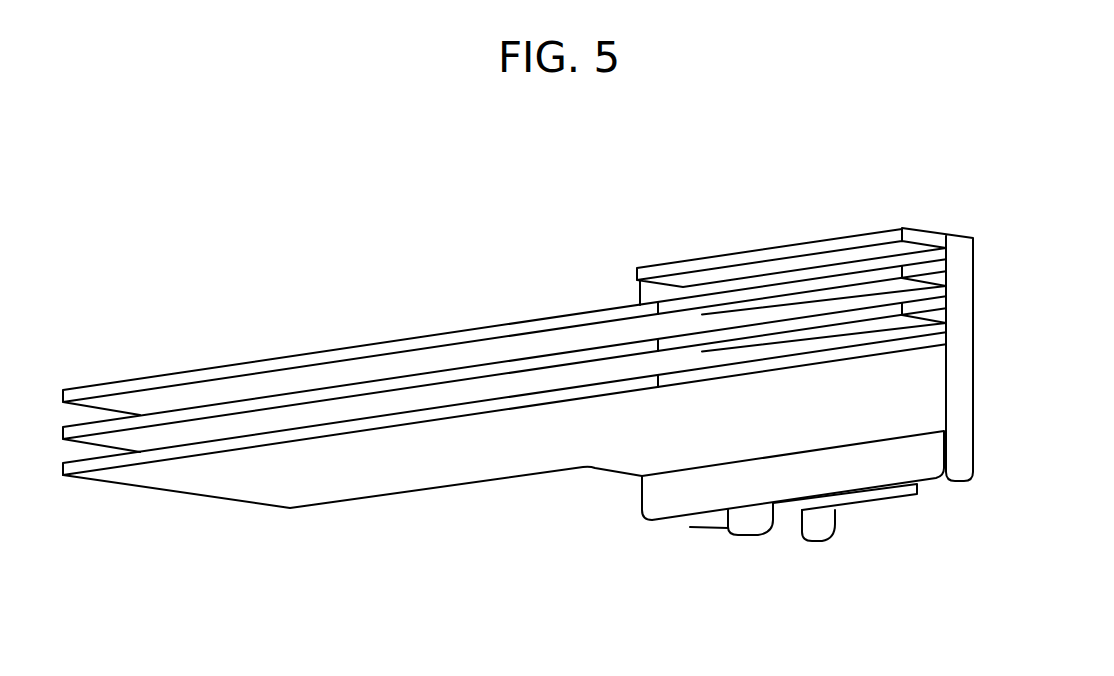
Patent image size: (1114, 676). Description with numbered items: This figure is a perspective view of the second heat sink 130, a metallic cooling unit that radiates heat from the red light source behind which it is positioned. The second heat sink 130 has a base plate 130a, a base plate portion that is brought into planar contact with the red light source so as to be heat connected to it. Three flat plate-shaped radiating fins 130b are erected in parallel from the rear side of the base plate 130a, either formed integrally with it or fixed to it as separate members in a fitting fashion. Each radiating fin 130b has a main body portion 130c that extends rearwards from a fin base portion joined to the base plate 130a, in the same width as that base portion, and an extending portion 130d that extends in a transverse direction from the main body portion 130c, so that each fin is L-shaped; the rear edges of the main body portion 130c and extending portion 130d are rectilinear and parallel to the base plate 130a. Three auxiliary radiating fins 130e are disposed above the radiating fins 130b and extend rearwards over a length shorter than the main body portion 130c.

The second heat sink 130 is at (949, 300).
The base plate 130a is at (947, 403).
The radiating fins 130b is at (463, 333).
The main body portion 130c is at (627, 427).
The extending portion 130d is at (363, 463).
The auxiliary radiating fins 130e is at (795, 242).